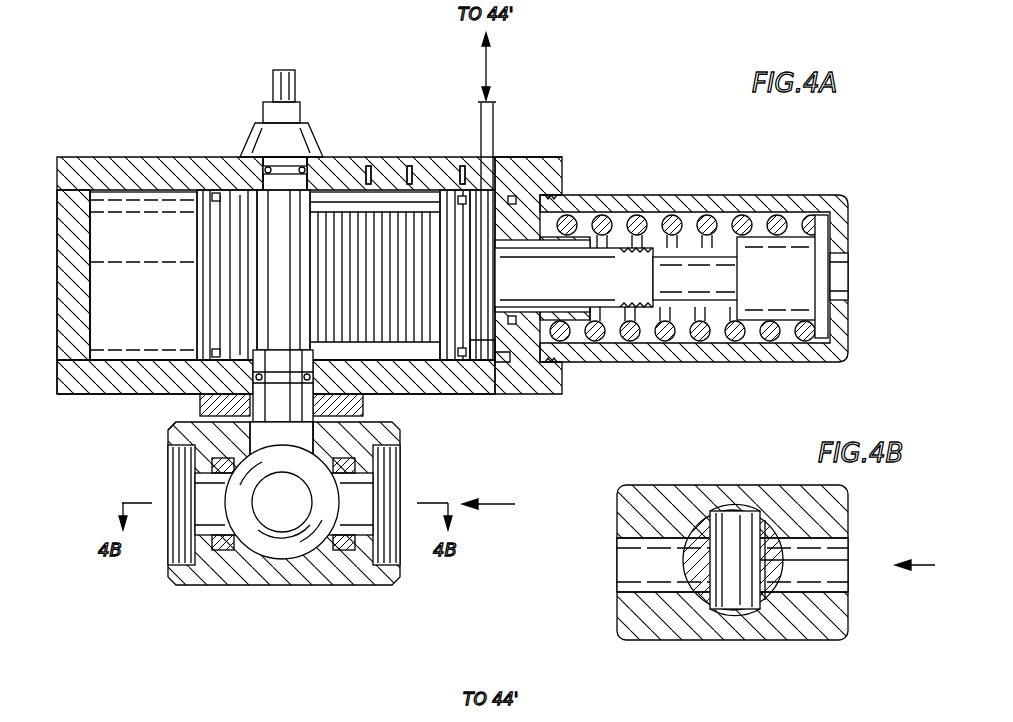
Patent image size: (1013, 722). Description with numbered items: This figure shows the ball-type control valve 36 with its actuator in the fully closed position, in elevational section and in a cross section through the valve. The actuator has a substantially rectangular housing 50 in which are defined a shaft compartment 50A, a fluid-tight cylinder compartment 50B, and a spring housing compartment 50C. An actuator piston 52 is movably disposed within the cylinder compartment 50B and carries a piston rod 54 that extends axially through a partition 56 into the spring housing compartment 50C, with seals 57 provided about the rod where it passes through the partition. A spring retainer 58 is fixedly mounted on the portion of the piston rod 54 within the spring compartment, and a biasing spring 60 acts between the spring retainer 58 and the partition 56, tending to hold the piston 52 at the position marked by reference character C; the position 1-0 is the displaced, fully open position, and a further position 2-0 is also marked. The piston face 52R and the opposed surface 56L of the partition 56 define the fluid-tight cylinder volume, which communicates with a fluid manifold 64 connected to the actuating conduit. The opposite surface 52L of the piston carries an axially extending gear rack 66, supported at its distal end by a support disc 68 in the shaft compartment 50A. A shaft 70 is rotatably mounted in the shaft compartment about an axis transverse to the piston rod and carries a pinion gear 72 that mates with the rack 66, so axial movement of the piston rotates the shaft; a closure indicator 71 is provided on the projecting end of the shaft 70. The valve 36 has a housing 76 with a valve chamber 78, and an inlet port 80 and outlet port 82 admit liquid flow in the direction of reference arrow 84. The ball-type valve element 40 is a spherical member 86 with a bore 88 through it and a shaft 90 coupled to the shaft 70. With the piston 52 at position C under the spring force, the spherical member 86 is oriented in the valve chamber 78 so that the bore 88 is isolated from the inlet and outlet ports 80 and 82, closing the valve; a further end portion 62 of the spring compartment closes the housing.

In FIG. 4A, the housing 50 is at (333, 157).
In FIG. 4A, the shaft compartment 50A is at (95, 393).
In FIG. 4A, the cylinder compartment 50B is at (418, 358).
In FIG. 4A, the spring housing compartment 50C is at (792, 340).
In FIG. 4A, the partition 56 is at (565, 385).
In FIG. 4A, the surface of the partition 56L is at (515, 157).
In FIG. 4A, the support disc 68 is at (215, 270).
In FIG. 4A, the gear rack 66 is at (252, 190).
In FIG. 4A, the pinion gear 72 is at (283, 316).
In FIG. 4A, the closure indicator 71 is at (245, 128).
In FIG. 4A, the piston face 52R is at (410, 210).
In FIG. 4A, the opposite surface of the piston 52L is at (487, 217).
In FIG. 4A, the actuator piston 52 is at (492, 360).
In FIG. 4A, the piston rod 54 is at (505, 300).
In FIG. 4A, the seals 57 is at (507, 360).
In FIG. 4A, the piston position 1-0 is at (369, 168).
In FIG. 4A, the second port 2-0 is at (410, 168).
In FIG. 4A, the piston position C is at (462, 168).
In FIG. 4A, the fluid manifold 64 is at (495, 133).
In FIG. 4A, the ball-type valve element 40 is at (617, 277).
In FIG. 4B, the ball-type valve element 40 is at (775, 572).
In FIG. 4A, the biasing spring 60 is at (748, 210).
In FIG. 4A, the spring retainer 58 is at (820, 212).
In FIG. 4A, the end cap 62 is at (845, 227).
In FIG. 4A, the shaft 70 is at (262, 363).
In FIG. 4A, the housing 76 is at (207, 588).
In FIG. 4A, the outlet port 82 is at (168, 548).
In FIG. 4B, the outlet port 82 is at (637, 540).
In FIG. 4A, the inlet port 80 is at (400, 548).
In FIG. 4B, the inlet port 80 is at (832, 546).
In FIG. 4A, the valve chamber 78 is at (290, 575).
In FIG. 4B, the valve chamber 78 is at (747, 613).
In FIG. 4A, the bore 88 is at (268, 522).
In FIG. 4B, the bore 88 is at (715, 607).
In FIG. 4A, the spherical member 86 is at (302, 545).
In FIG. 4B, the spherical member 86 is at (770, 530).
In FIG. 4A, the shaft 90 is at (168, 430).
In FIG. 4A, the reference arrow 84 is at (500, 505).
In FIG. 4B, the reference arrow 84 is at (930, 566).
In FIG. 4B, the control valve 36 is at (827, 643).